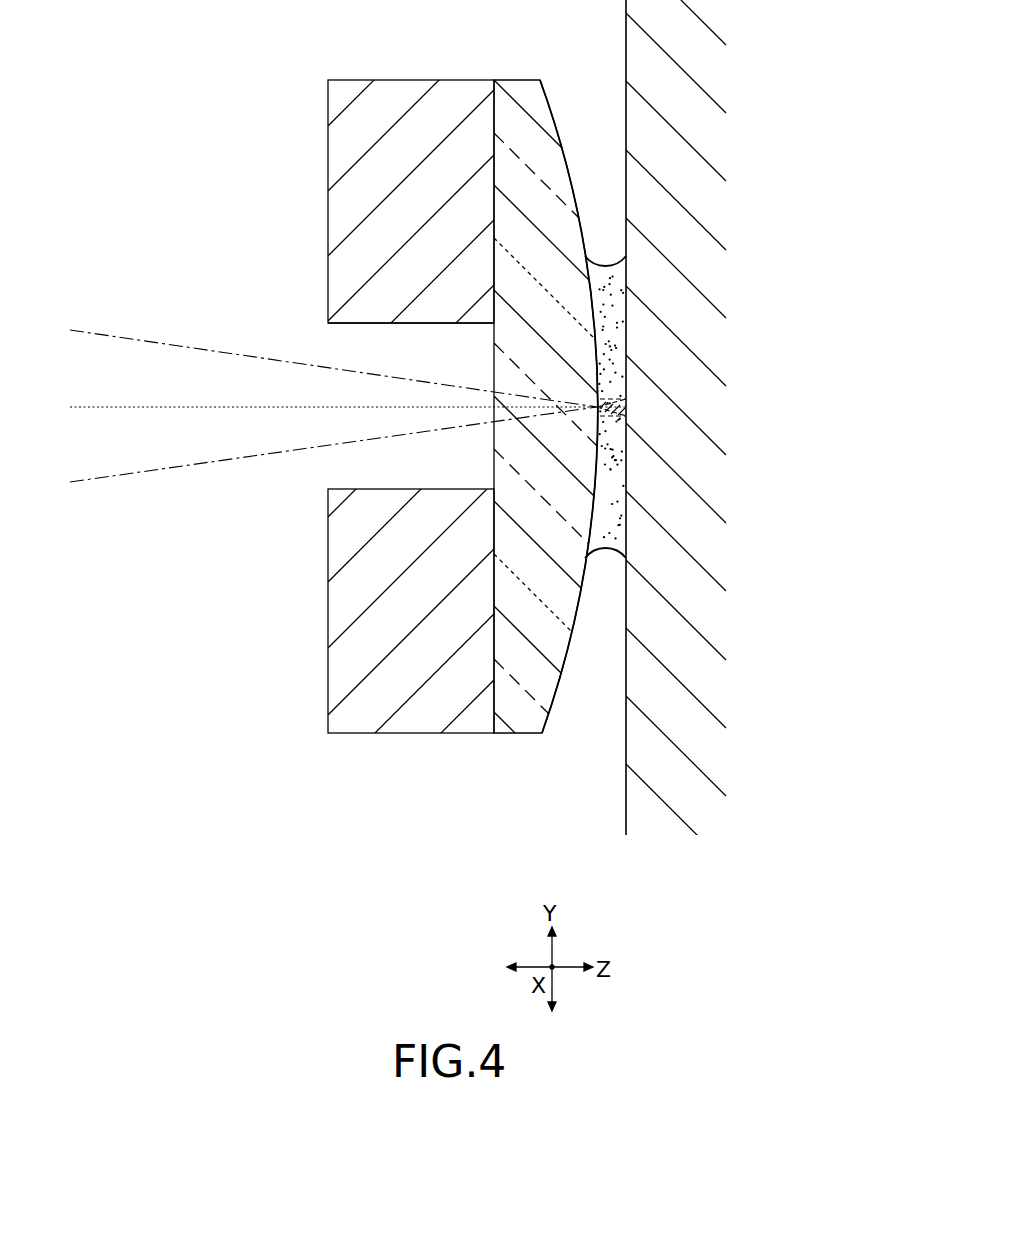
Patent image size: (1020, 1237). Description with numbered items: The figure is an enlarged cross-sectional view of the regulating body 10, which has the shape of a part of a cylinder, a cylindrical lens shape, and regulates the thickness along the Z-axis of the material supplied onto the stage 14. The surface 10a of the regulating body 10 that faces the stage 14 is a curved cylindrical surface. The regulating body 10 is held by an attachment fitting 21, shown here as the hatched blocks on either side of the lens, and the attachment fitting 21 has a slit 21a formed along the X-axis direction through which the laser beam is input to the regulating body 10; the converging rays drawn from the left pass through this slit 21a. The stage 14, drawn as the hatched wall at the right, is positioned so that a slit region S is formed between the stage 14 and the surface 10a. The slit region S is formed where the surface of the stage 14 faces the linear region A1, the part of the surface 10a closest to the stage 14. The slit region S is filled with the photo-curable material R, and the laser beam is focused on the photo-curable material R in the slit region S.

The regulating body 10 is at (520, 90).
The surface of the regulating body 10a is at (564, 113).
The attachment fitting 21 is at (338, 206).
The slit 21a is at (340, 333).
The photo-curable material R is at (605, 280).
The slit region S is at (613, 397).
The linear region A1 is at (612, 413).
The stage 14 is at (626, 797).